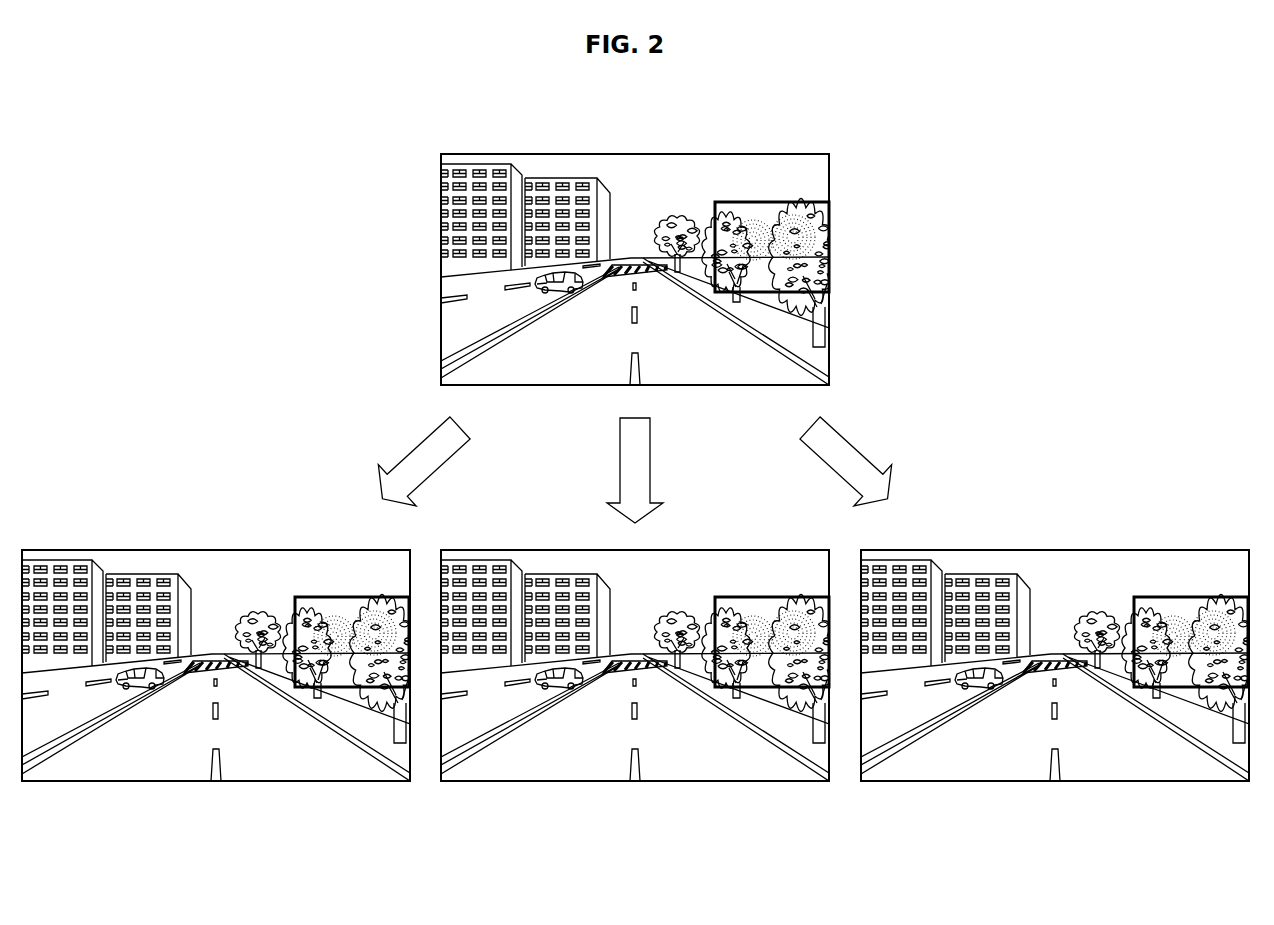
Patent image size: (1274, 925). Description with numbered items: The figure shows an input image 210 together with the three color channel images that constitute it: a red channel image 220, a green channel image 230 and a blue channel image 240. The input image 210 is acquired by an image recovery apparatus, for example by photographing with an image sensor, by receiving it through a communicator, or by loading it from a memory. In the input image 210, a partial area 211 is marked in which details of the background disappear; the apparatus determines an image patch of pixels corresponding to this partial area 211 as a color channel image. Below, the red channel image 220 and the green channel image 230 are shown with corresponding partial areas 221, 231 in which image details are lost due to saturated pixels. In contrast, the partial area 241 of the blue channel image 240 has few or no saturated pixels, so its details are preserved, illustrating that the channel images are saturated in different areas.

The input image 210 is at (798, 153).
The partial area 211 is at (803, 202).
The red channel image 220 is at (180, 780).
The partial area 221 is at (353, 687).
The green channel image 230 is at (600, 780).
The partial area 231 is at (773, 687).
The blue channel image 240 is at (1020, 780).
The partial area 241 is at (1192, 687).